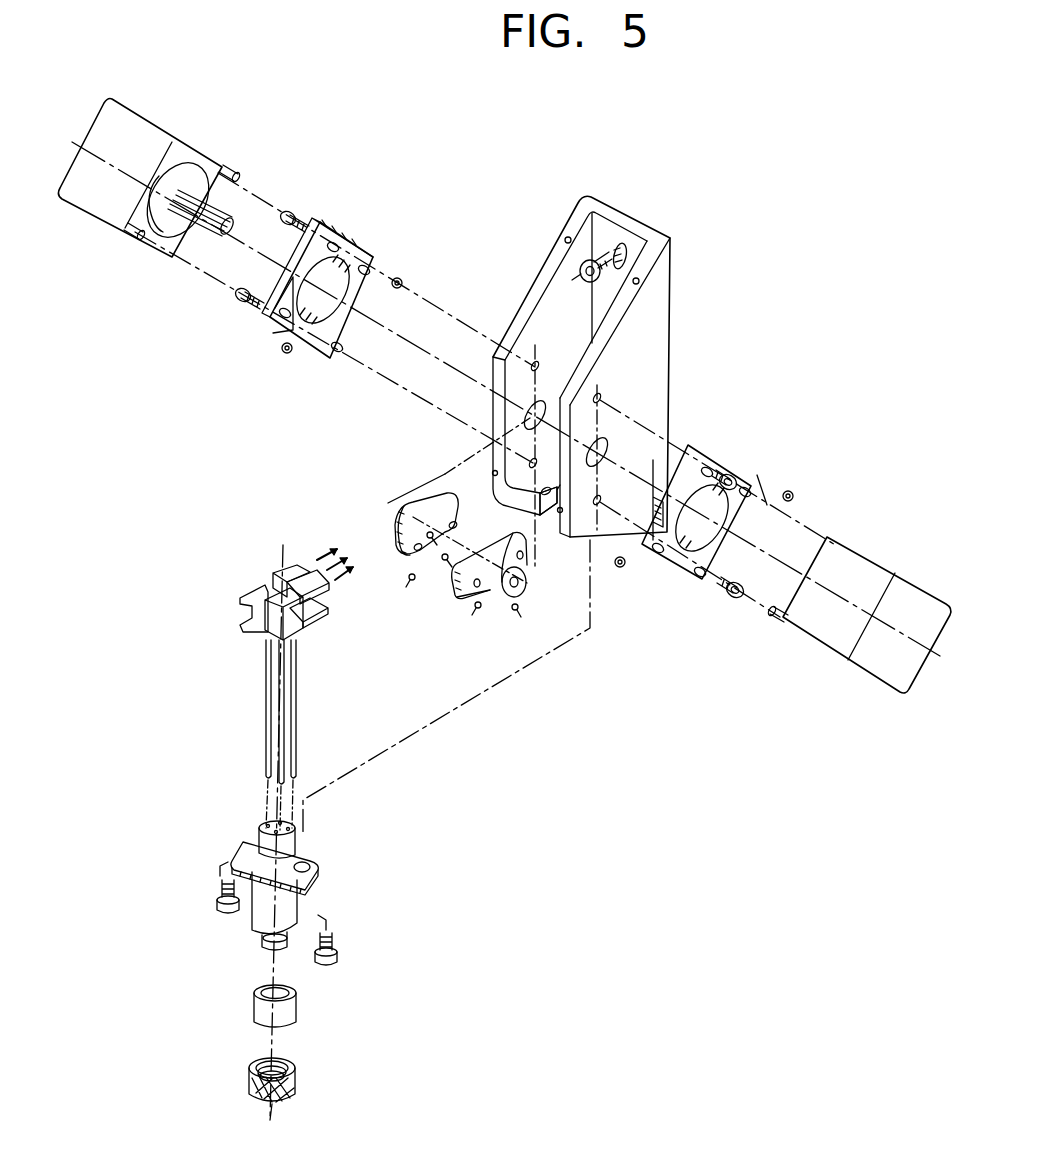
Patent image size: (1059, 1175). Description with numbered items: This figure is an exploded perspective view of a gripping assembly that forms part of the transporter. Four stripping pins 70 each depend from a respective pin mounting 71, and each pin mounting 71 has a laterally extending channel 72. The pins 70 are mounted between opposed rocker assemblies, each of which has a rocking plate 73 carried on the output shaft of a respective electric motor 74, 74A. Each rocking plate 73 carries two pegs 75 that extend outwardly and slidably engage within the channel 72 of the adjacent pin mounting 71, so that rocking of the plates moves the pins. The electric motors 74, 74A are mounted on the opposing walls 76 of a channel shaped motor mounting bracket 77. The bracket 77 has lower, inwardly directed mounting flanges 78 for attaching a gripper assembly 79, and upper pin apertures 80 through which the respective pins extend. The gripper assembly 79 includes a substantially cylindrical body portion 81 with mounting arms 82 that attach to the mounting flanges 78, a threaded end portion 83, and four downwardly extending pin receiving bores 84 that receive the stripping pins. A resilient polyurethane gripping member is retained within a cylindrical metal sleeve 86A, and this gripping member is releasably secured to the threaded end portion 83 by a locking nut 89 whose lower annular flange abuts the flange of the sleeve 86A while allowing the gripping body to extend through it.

The stripping pins 70 is at (265, 718).
The pin mounting 71 is at (323, 620).
The laterally extending channel 72 is at (240, 612).
The rocking plate 73 is at (393, 538).
The electric motor 74 is at (141, 141).
The electric motor 74A is at (818, 630).
The pegs 75 is at (463, 528).
The opposing walls 76 is at (572, 334).
The motor mounting bracket 77 is at (603, 204).
The mounting flanges 78 is at (517, 485).
The gripper assembly 79 is at (290, 897).
The pin apertures 80 is at (538, 497).
The body portion 81 is at (290, 903).
The mounting arms 82 is at (240, 849).
The threaded end portion 83 is at (263, 945).
The pin receiving bores 84 is at (303, 827).
The cylindrical metal sleeve 86A is at (287, 1017).
The locking nut 89 is at (297, 1083).